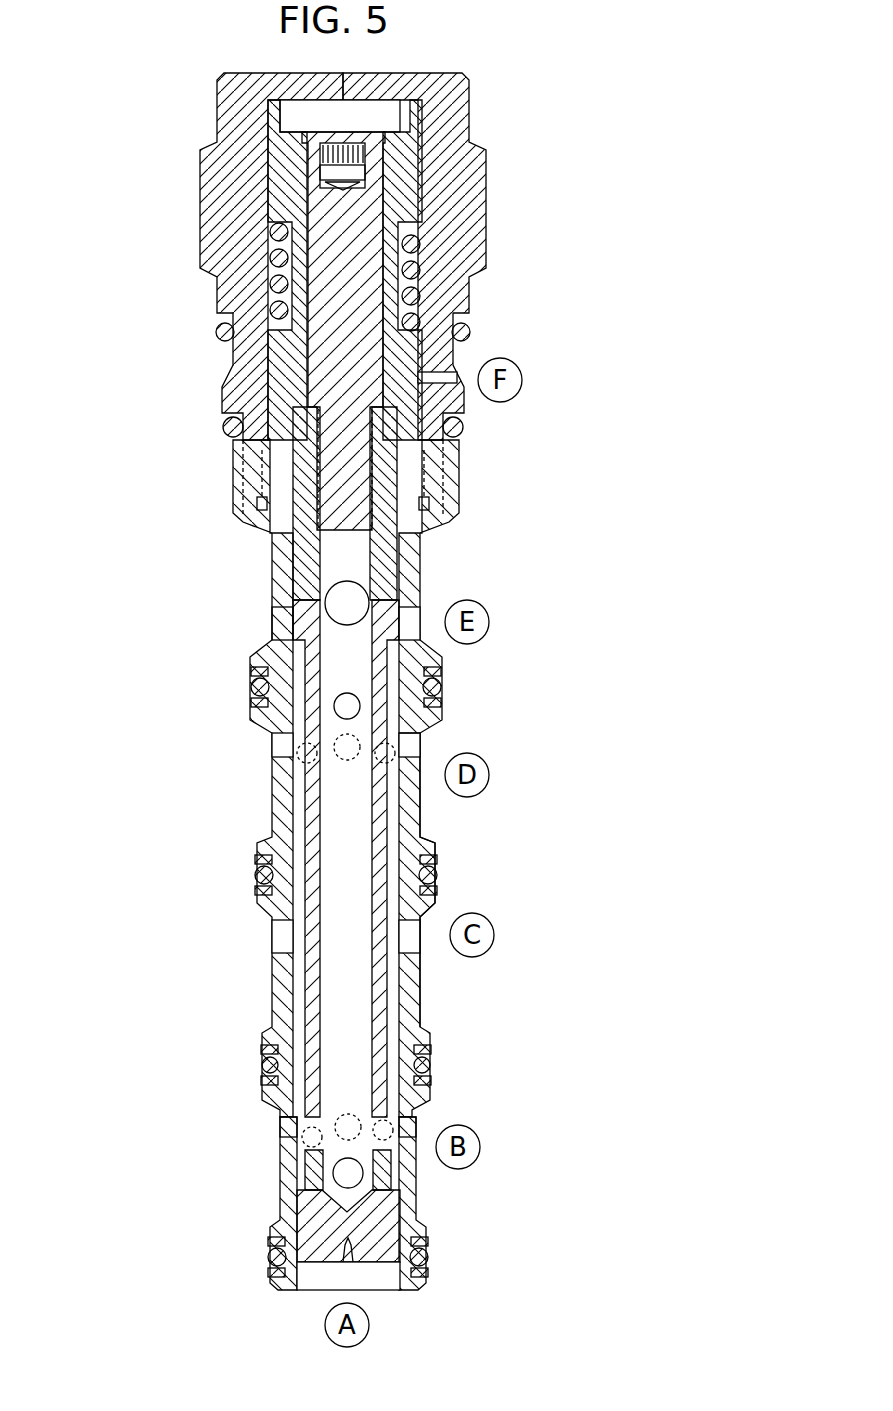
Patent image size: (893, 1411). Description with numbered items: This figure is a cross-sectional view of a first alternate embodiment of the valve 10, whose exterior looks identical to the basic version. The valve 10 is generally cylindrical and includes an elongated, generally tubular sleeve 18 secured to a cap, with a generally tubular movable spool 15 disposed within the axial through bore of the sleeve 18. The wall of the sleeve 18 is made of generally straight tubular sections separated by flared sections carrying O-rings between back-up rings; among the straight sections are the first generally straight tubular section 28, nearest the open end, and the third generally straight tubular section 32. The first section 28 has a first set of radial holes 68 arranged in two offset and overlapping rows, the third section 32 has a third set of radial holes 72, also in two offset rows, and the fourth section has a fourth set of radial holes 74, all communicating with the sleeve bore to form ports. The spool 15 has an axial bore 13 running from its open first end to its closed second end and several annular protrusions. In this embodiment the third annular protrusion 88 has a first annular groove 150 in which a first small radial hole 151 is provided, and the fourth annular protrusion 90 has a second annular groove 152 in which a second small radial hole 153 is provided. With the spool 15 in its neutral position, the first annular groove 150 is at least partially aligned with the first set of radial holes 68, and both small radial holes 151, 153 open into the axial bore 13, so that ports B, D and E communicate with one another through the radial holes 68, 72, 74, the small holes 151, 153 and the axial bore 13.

The valve 10 is at (157, 678).
The axial bore 13 is at (347, 930).
The spool 15 is at (398, 1000).
The sleeve 18 is at (420, 590).
The first generally straight tubular section 28 is at (277, 1167).
The third generally straight tubular section 32 is at (420, 795).
The first set of radial holes 68 is at (398, 1130).
The third set of radial holes 72 is at (420, 747).
The fourth set of radial holes 74 is at (273, 628).
The third annular protrusion 88 is at (273, 742).
The fourth annular protrusion 90 is at (290, 1129).
The first annular groove 150 is at (420, 733).
The first small radial hole 151 is at (355, 740).
The second annular groove 152 is at (420, 1145).
The second small radial hole 153 is at (375, 1145).